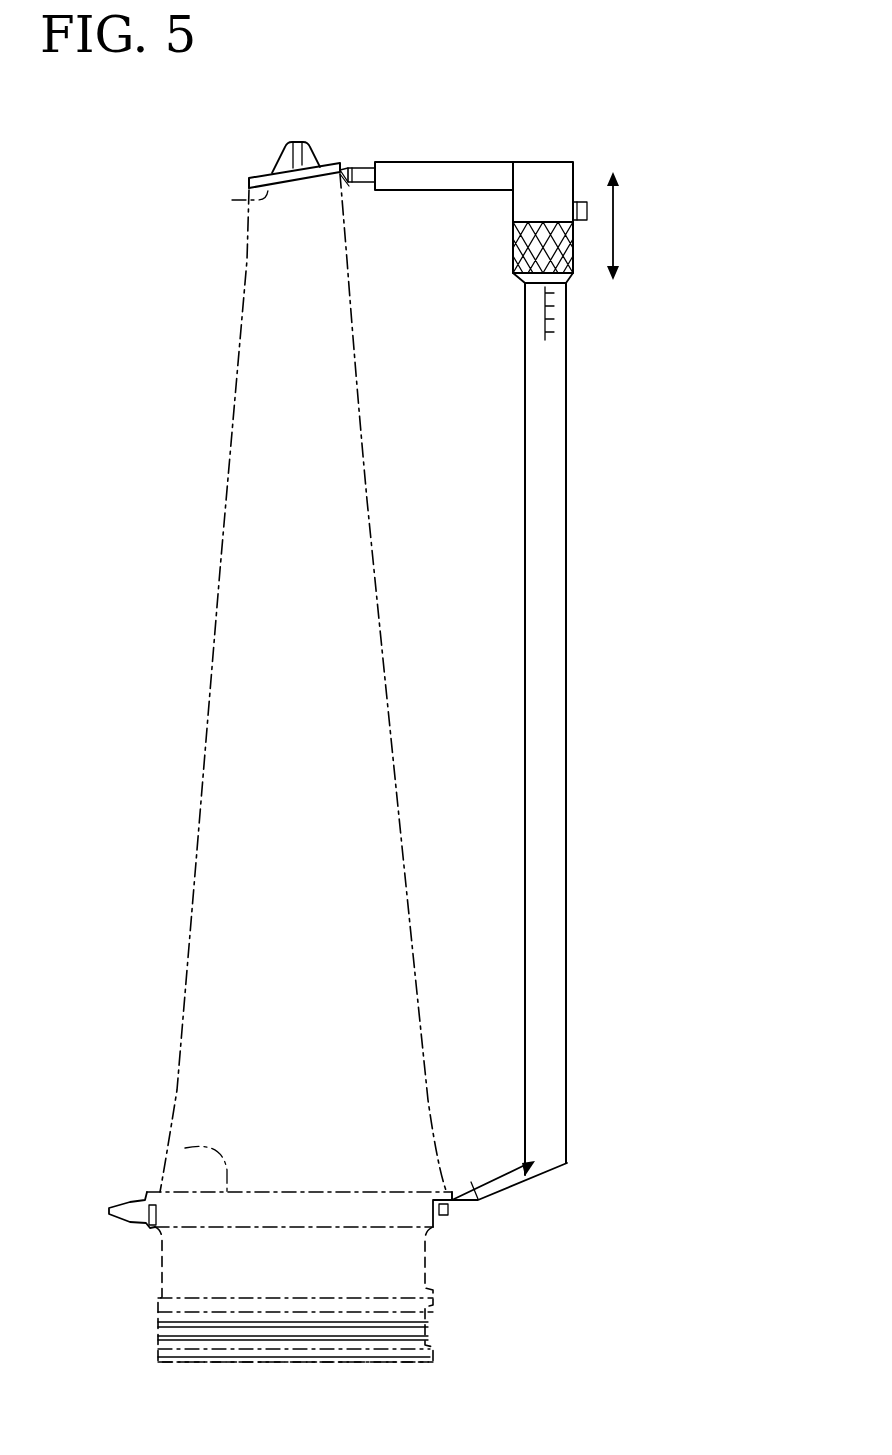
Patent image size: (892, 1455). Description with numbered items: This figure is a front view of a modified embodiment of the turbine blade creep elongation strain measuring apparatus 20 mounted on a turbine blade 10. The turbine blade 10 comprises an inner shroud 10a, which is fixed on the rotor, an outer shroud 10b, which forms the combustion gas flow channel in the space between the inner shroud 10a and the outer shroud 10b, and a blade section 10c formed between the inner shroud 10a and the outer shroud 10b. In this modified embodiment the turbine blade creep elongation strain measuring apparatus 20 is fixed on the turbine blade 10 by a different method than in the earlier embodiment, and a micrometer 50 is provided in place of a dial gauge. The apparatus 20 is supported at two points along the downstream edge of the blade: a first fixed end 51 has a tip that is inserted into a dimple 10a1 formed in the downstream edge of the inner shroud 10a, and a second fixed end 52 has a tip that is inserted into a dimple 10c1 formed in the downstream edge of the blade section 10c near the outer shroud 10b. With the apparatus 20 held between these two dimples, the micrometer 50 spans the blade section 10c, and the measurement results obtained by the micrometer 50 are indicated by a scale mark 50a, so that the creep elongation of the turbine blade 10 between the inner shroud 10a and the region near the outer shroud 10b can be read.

The turbine blade 10 is at (213, 663).
The inner shroud 10a is at (185, 1150).
The dimple 10a1 is at (455, 1203).
The outer shroud 10b is at (238, 201).
The blade section 10c is at (196, 820).
The dimple 10c1 is at (357, 188).
The turbine blade creep elongation strain measuring apparatus 20 is at (630, 491).
The micrometer 50 is at (571, 242).
The scale mark 50a is at (537, 320).
The first fixed end 51 is at (492, 1180).
The second fixed end 52 is at (362, 170).